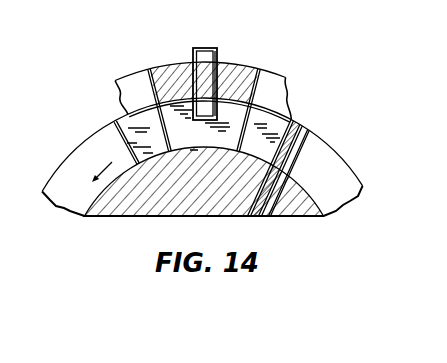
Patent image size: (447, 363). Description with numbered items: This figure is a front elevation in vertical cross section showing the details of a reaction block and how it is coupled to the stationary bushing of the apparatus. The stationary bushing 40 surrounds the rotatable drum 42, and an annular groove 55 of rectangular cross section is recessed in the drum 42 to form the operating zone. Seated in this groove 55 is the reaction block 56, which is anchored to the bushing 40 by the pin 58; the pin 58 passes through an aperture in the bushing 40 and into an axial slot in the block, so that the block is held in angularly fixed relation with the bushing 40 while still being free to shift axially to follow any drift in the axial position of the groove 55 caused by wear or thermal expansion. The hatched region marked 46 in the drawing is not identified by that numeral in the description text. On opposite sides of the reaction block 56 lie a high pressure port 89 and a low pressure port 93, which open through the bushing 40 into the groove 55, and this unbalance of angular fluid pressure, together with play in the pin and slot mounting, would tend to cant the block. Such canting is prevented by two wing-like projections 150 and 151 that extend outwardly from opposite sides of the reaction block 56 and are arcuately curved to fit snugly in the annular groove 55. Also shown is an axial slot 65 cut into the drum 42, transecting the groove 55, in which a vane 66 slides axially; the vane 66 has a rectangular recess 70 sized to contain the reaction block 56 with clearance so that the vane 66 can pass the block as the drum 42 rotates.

The stationary bushing 40 is at (163, 80).
The low pressure port 93 is at (126, 78).
The pin 58 is at (192, 58).
The reaction block 56 is at (227, 107).
The high pressure port 89 is at (266, 84).
The wing-like projection 150 is at (280, 128).
The vane 66 is at (304, 139).
The rectangular recess 70 is at (311, 161).
The annular groove 55 is at (345, 181).
The axial slot 65 is at (285, 198).
The rotatable drum 42 is at (125, 205).
The core (hatched ring) 46 is at (203, 121).
The wing-like projection 151 is at (127, 123).